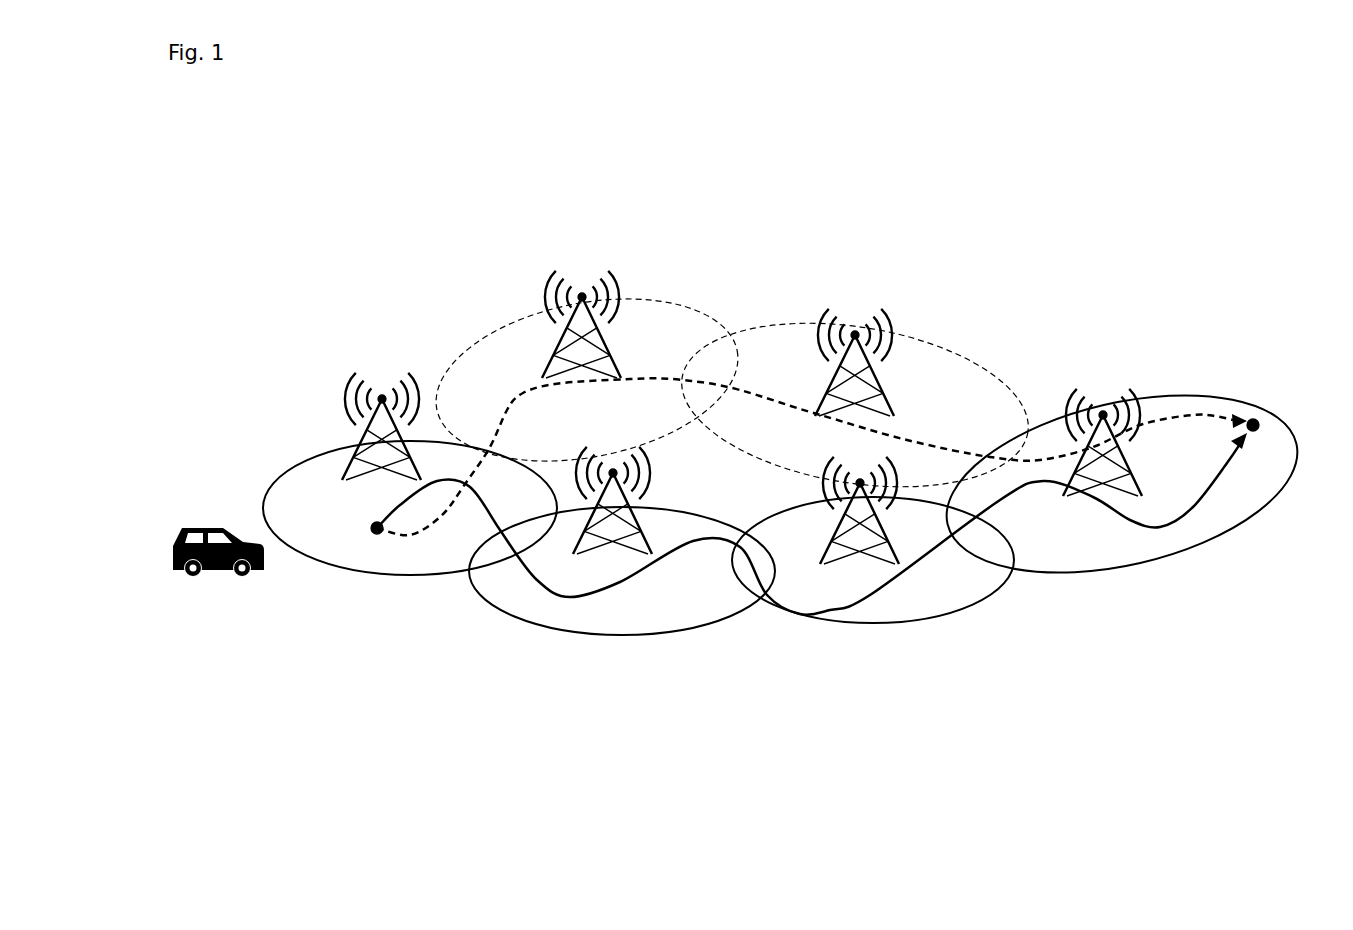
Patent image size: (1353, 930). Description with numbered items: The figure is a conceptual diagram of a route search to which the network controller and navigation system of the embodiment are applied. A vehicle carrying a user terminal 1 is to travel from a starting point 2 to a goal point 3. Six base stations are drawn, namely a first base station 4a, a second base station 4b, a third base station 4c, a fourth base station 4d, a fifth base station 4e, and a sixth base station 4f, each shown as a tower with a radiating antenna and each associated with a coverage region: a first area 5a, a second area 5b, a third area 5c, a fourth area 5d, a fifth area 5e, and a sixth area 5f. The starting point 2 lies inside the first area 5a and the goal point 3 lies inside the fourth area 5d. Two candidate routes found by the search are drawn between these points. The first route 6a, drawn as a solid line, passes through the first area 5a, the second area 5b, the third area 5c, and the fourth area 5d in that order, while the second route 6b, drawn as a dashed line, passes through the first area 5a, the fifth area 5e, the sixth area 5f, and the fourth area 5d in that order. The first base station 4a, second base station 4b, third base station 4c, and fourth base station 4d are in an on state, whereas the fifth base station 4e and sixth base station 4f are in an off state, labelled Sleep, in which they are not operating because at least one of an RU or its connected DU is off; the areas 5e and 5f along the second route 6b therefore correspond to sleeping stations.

The user terminal 1 is at (197, 527).
The starting point 2 is at (370, 528).
The goal point 3 is at (1255, 432).
The first base station 4a is at (382, 395).
The second base station 4b is at (647, 557).
The third base station 4c is at (897, 562).
The fourth base station 4d is at (1103, 411).
The fifth base station 4e is at (582, 293).
The sixth base station 4f is at (855, 331).
The first area 5a is at (358, 577).
The second area 5b is at (545, 628).
The third area 5c is at (810, 622).
The fourth area 5d is at (1090, 570).
The fifth area 5e is at (470, 353).
The sixth area 5f is at (980, 370).
The first route 6a is at (1170, 527).
The second route 6b is at (1210, 408).